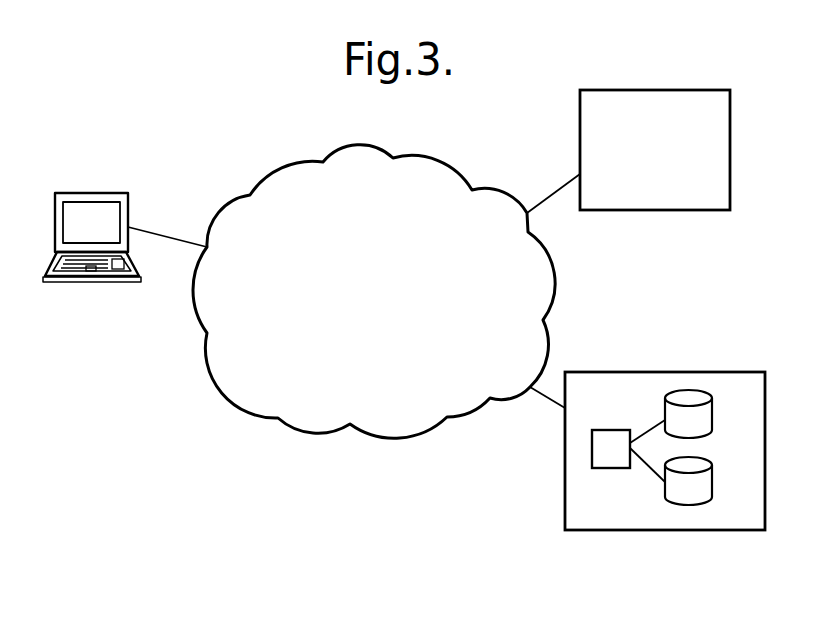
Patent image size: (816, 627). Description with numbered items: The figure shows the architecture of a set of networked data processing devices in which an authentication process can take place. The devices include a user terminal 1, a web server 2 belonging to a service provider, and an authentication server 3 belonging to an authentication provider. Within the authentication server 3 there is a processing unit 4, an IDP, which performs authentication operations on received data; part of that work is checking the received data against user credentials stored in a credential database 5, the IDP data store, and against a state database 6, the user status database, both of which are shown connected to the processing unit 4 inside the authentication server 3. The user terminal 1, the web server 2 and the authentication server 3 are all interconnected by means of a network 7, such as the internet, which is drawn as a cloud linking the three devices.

The user terminal 1 is at (75, 283).
The web server 2 is at (643, 90).
The authentication server 3 is at (590, 520).
The processing unit 4 is at (597, 458).
The credential database 5 is at (688, 392).
The state database 6 is at (683, 500).
The network 7 is at (265, 405).